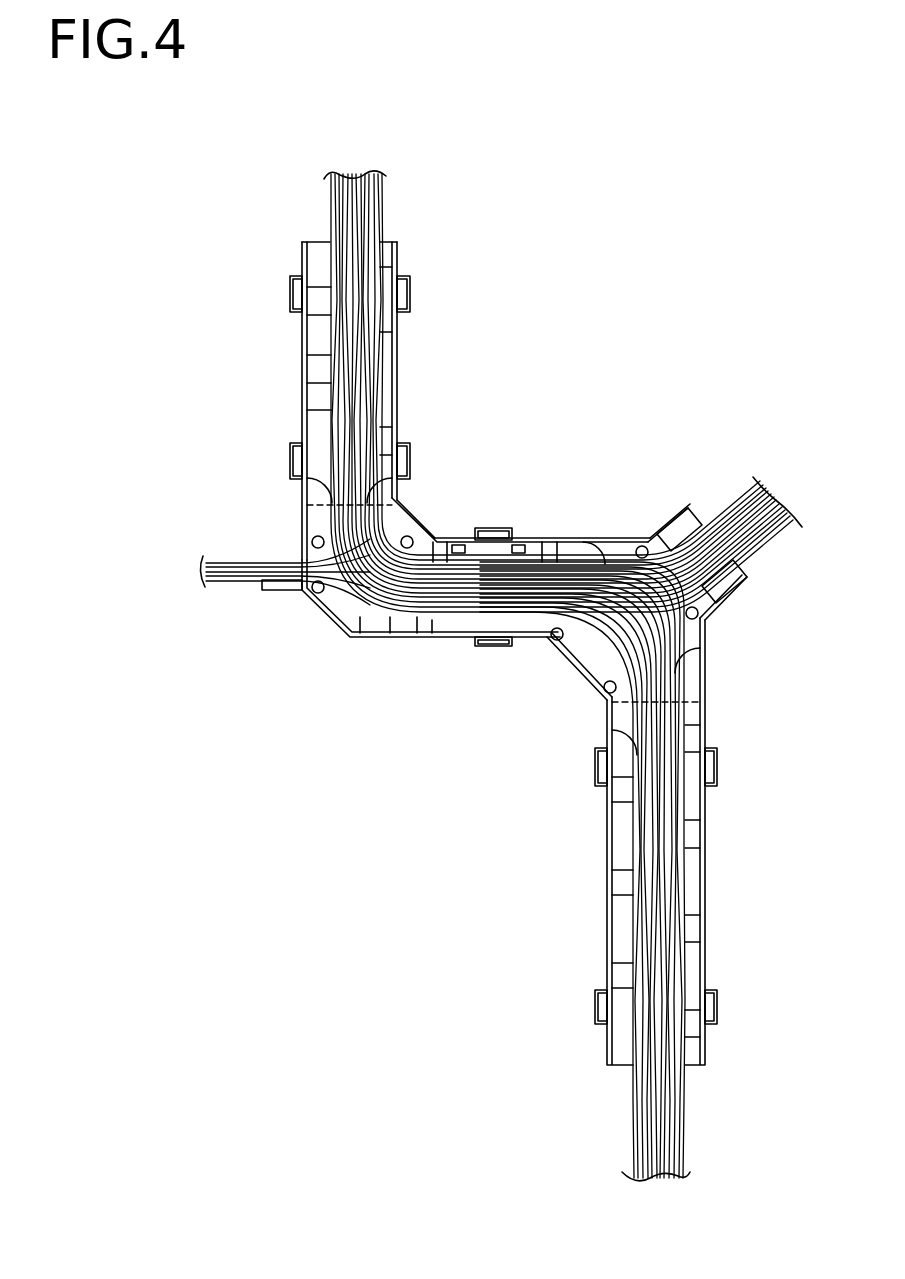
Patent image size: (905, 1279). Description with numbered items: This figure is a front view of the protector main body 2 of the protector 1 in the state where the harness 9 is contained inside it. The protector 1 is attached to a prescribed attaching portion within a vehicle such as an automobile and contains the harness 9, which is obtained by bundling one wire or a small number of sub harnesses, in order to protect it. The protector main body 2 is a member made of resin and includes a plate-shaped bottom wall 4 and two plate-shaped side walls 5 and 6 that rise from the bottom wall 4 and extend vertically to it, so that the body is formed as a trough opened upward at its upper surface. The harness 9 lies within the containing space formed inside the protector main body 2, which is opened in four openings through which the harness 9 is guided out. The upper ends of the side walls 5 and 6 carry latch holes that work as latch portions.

The protector 1 is at (414, 807).
The protector main body 2 is at (398, 640).
The bottom wall 4 is at (323, 248).
The side wall 5 is at (705, 818).
The side wall 6 is at (567, 667).
The harness 9 is at (657, 743).